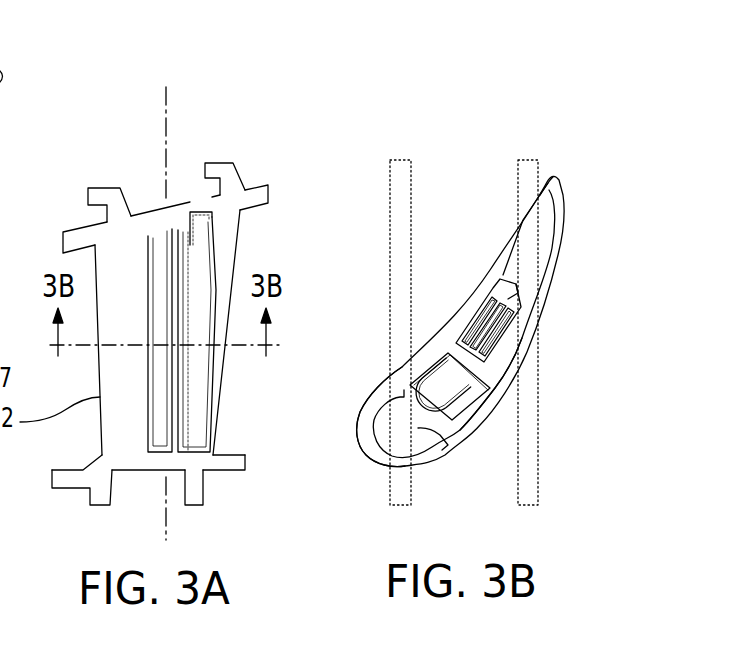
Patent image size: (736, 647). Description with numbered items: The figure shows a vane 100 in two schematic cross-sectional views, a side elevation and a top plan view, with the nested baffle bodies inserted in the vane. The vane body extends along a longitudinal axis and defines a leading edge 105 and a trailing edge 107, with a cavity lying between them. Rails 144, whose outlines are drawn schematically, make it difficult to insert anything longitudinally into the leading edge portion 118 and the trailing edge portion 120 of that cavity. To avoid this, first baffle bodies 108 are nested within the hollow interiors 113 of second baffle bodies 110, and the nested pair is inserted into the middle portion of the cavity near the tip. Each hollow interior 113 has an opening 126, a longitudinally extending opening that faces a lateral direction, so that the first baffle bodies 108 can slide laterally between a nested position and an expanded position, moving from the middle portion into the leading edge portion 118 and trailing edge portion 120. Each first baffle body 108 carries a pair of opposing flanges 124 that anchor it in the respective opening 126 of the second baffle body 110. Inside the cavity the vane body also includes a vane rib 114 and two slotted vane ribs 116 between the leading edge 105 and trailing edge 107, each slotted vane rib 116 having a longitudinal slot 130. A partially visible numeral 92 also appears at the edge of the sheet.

In FIG. 3A, the vane 100 is at (255, 173).
In FIG. 3B, the vane 100 is at (477, 124).
In FIG. 3A, the rails 144 is at (103, 190).
In FIG. 3B, the rails 144 is at (398, 160).
In FIG. 3A, the first baffle bodies 108 is at (200, 210).
In FIG. 3B, the first baffle bodies 108 is at (488, 334).
In FIG. 3A, the second baffle bodies 110 is at (215, 230).
In FIG. 3B, the second baffle bodies 110 is at (515, 320).
In FIG. 3A, the trailing edge portion 120 is at (217, 362).
In FIG. 3A, the leading edge portion 118 is at (107, 427).
In FIG. 3A, the platform 92 is at (7, 318).
In FIG. 3B, the trailing edge 107 is at (557, 173).
In FIG. 3B, the leading edge 105 is at (365, 458).
In FIG. 3B, the vane rib 114 is at (483, 422).
In FIG. 3B, the opening 126 is at (515, 280).
In FIG. 3B, the hollow interiors 113 is at (490, 308).
In FIG. 3B, the slotted vane ribs 116 is at (517, 287).
In FIG. 3B, the opposing flanges 124 is at (411, 365).
In FIG. 3B, the longitudinal slot 130 is at (423, 432).